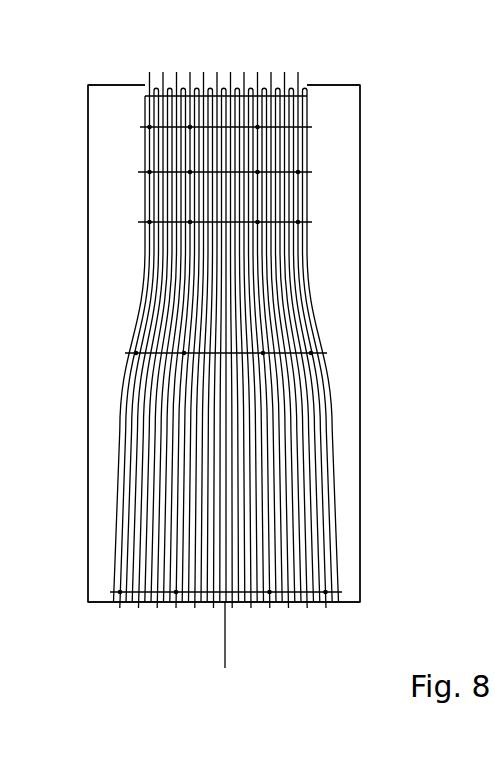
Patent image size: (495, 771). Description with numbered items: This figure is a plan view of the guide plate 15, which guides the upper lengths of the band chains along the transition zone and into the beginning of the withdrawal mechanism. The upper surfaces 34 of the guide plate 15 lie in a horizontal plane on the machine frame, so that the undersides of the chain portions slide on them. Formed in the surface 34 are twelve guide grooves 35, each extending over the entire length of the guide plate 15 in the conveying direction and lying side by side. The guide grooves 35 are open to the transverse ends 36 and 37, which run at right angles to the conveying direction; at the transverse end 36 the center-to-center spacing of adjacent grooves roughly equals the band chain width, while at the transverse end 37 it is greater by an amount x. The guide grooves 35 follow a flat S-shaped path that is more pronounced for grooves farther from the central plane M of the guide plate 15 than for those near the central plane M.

The guide plate 15 is at (362, 305).
The upper surface 34 is at (130, 254).
The guide groove 35 is at (331, 440).
The transverse end 36 is at (331, 84).
The transverse end 37 is at (328, 601).
The central plane M is at (226, 648).